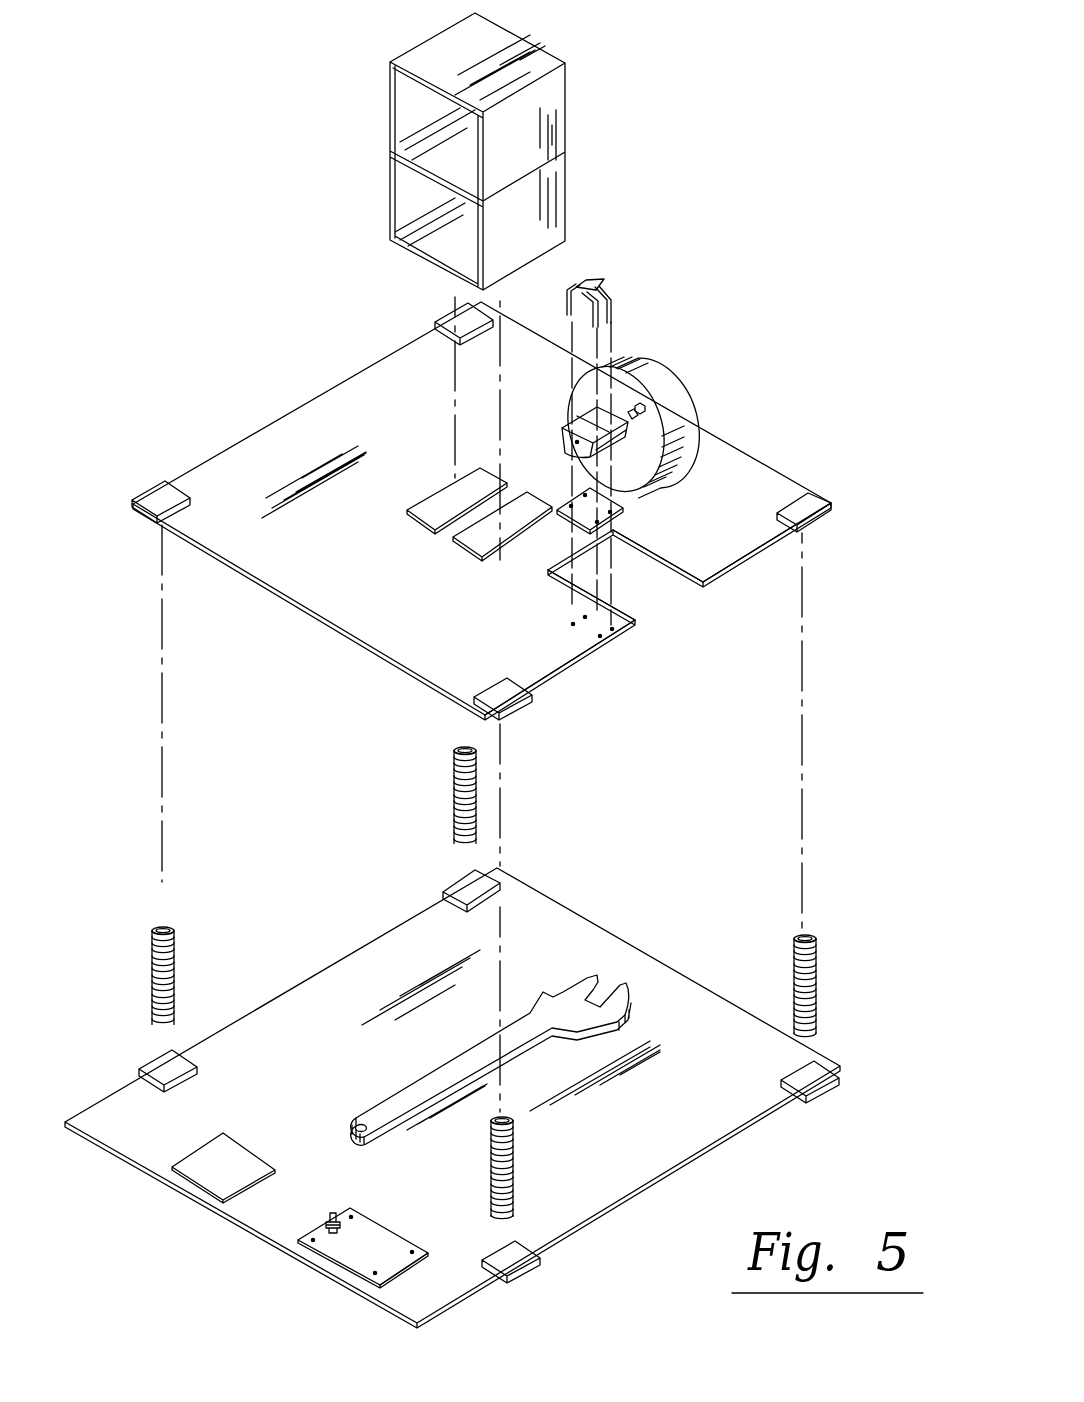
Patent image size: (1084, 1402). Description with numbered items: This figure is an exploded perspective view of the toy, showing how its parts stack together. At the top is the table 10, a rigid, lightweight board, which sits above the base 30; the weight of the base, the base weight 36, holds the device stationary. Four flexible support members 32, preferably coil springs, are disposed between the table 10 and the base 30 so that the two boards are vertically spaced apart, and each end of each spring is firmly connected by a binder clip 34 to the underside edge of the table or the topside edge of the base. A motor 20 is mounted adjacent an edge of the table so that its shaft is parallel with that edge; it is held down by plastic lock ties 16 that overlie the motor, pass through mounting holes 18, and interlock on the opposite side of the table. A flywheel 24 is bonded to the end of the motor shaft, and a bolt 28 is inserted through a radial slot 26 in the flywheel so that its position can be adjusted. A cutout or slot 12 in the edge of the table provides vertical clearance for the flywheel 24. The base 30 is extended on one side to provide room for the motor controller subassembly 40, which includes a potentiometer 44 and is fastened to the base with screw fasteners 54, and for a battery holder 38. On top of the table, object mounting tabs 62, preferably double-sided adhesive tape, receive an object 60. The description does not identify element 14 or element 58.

The table 10 is at (290, 442).
The cutout or slot 12 is at (663, 563).
The mounting plate 14 is at (628, 512).
The plastic lock ties 16 is at (604, 283).
The mounting holes 18 is at (585, 615).
The motor 20 is at (563, 440).
The flywheel 24 is at (650, 385).
The radial slot 26 is at (636, 417).
The bolt 28 is at (645, 408).
The base 30 is at (355, 975).
The flexible support members 32 is at (150, 962).
The binder clip 34 is at (160, 493).
The base weight 36 is at (400, 1085).
The battery holder 38 is at (225, 1162).
The motor controller subassembly 40 is at (355, 1250).
The potentiometer 44 is at (326, 1226).
The screw fasteners 54 is at (410, 1255).
The upper panel surface 58 is at (370, 400).
The object 60 is at (390, 133).
The object mounting tabs 62 is at (495, 518).